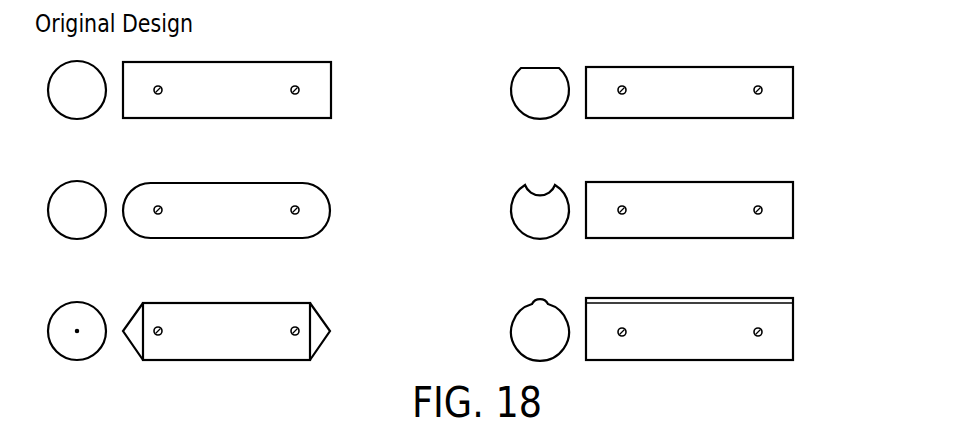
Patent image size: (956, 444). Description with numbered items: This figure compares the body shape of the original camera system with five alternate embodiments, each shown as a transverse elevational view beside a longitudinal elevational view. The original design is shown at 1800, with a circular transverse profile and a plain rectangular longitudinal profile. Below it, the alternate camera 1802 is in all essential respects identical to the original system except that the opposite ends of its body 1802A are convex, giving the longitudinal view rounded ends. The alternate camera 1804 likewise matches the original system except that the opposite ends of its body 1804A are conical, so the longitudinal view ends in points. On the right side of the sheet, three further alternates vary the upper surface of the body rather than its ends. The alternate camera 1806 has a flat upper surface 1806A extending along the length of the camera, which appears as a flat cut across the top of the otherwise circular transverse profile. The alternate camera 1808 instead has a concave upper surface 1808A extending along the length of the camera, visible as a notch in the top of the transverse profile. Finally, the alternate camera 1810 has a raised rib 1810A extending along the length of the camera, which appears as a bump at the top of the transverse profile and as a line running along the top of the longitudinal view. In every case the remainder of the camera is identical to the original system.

The transverse and longitudinal elevational view of the original system 1800 is at (366, 93).
The alternate camera with convex ends 1802 is at (249, 195).
The body 1802A is at (330, 210).
The alternate camera with conical ends 1804 is at (253, 321).
The body 1804A is at (316, 312).
The alternate camera with flat upper surface 1806 is at (703, 67).
The flat upper surface 1806A is at (540, 68).
The alternate camera with concave upper surface 1808 is at (703, 190).
The concave upper surface 1808A is at (540, 195).
The alternate camera with raised rib 1810 is at (703, 303).
The raised rib 1810A is at (540, 300).